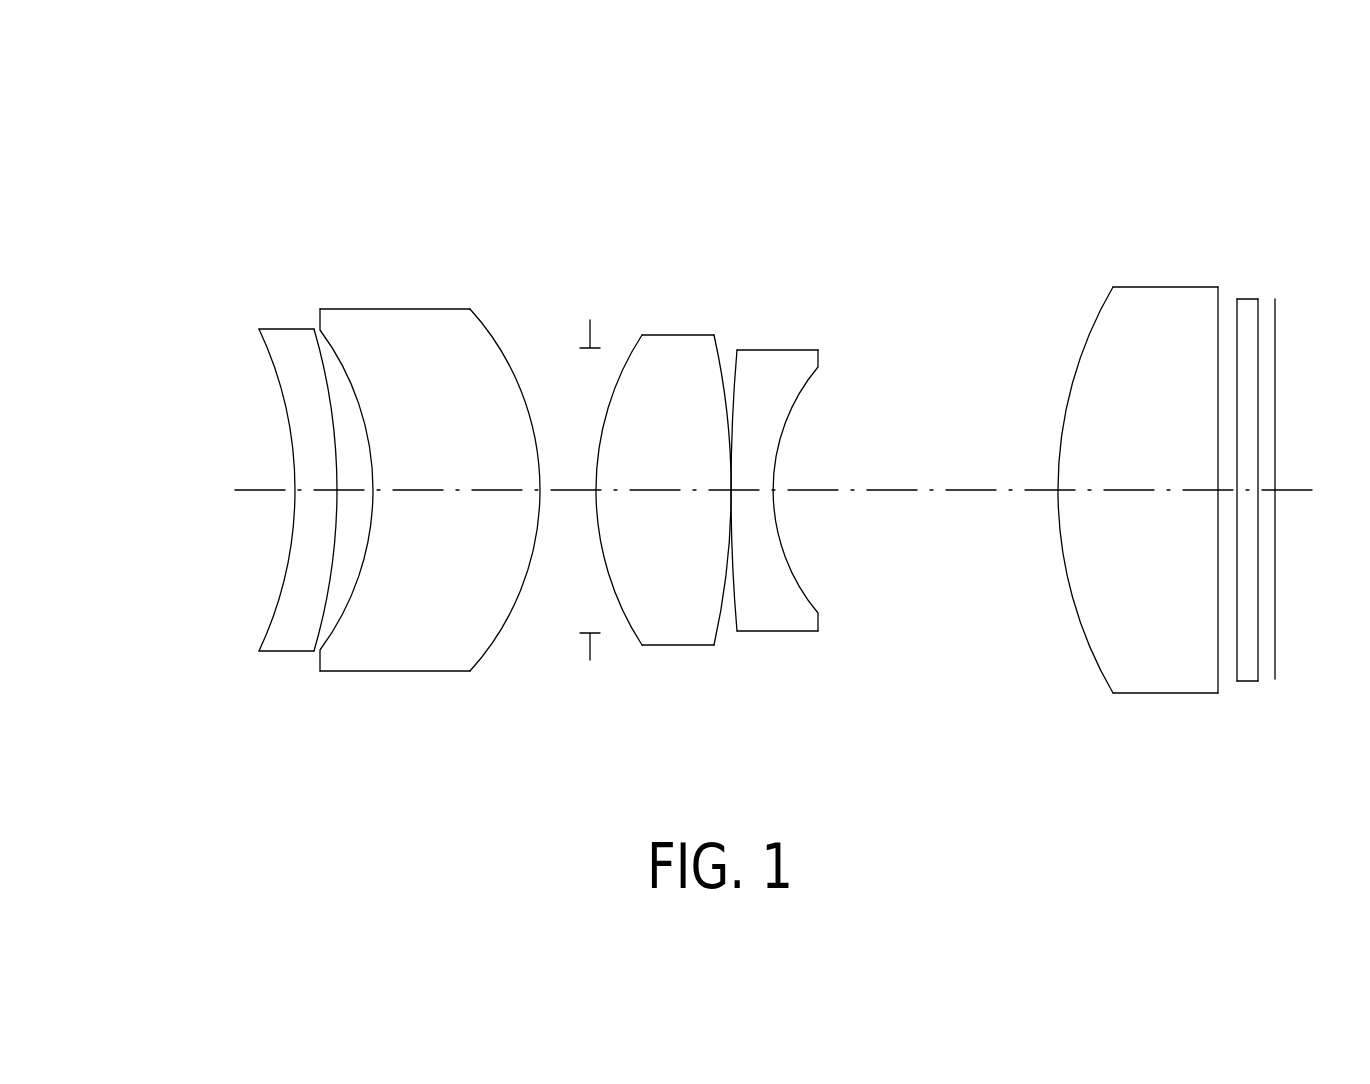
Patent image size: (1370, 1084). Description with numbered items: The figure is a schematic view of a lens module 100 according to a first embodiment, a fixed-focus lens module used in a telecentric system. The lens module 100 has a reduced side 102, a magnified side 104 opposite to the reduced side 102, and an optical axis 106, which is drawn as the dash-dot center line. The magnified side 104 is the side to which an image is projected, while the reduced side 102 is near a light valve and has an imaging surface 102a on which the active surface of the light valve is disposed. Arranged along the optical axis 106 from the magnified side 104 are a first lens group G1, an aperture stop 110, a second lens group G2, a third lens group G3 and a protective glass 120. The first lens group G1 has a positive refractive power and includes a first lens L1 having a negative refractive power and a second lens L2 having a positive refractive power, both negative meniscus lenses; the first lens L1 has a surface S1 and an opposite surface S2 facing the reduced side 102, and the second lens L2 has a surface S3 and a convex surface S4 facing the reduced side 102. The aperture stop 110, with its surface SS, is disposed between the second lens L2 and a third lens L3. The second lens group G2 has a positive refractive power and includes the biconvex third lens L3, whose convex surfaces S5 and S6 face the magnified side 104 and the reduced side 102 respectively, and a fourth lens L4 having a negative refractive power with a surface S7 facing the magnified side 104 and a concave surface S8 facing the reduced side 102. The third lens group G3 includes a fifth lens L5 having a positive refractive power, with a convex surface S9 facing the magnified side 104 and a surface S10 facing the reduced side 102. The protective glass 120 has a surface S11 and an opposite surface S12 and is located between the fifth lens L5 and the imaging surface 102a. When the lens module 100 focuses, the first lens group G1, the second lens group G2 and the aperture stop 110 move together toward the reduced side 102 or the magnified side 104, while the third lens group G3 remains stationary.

The lens module 100 is at (1273, 818).
The reduced side 102 is at (1296, 385).
The imaging surface 102a is at (1275, 327).
The magnified side 104 is at (203, 292).
The optical axis 106 is at (1320, 482).
The aperture stop 110 is at (576, 427).
The protective glass 120 is at (1224, 534).
The first lens group G1 is at (470, 214).
The second lens group G2 is at (818, 214).
The third lens group G3 is at (1220, 214).
The first lens L1 is at (277, 528).
The second lens L2 is at (341, 528).
The third lens L3 is at (671, 547).
The fourth lens L4 is at (701, 566).
The fifth lens L5 is at (1177, 528).
The surface of first lens S1 is at (282, 590).
The surface of first lens S2 is at (323, 612).
The surface of second lens S3 is at (372, 527).
The surface of second lens S4 is at (498, 632).
The aperture stop surface SS is at (588, 653).
The surface of third lens S5 is at (627, 623).
The surface of third lens S6 is at (732, 631).
The surface of fourth lens S7 is at (730, 535).
The surface of fourth lens S8 is at (800, 587).
The surface of fifth lens S9 is at (1083, 630).
The surface of fifth lens S10 is at (1218, 593).
The surface of protective glass S11 is at (1235, 553).
The surface of protective glass S12 is at (1258, 548).